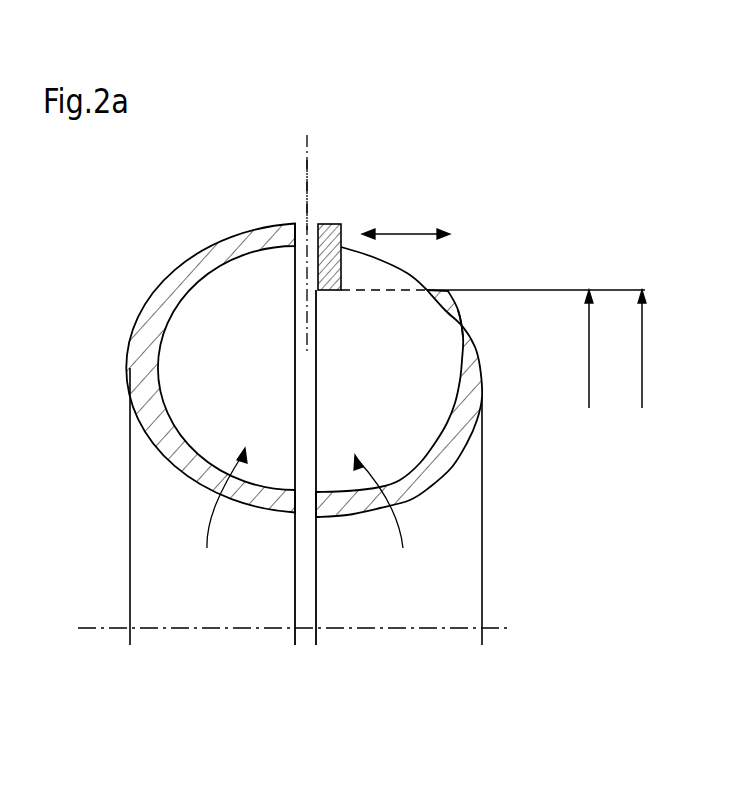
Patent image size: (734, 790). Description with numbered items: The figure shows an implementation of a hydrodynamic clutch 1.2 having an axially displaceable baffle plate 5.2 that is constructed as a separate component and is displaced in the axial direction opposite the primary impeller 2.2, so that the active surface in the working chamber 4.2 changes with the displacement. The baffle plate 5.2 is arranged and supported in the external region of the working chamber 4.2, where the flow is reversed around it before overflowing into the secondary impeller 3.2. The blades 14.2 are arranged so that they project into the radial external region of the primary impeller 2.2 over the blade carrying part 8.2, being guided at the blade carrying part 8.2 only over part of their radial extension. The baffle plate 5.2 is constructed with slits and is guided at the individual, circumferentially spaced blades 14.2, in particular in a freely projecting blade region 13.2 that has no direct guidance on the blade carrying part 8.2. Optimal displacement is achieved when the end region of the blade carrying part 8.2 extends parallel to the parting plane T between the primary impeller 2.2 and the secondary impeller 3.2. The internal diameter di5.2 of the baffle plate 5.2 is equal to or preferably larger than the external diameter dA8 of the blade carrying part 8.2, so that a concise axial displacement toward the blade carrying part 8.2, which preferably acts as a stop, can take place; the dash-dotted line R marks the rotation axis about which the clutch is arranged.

The hydrodynamic clutch 1.2 is at (310, 124).
The parting plane T is at (305, 190).
The baffle plate 5.2 is at (328, 223).
The blade region 13.2 is at (395, 278).
The working chamber 4.2 is at (240, 381).
The blades 14.2 is at (402, 382).
The blade carrying part 8.2 is at (465, 396).
The secondary impeller 3.2 is at (220, 517).
The primary impeller 2.2 is at (386, 521).
The external diameter of the blade carrying part dA8 is at (589, 348).
The internal diameter of the baffle plate di5.2 is at (642, 345).
The axis R is at (100, 630).